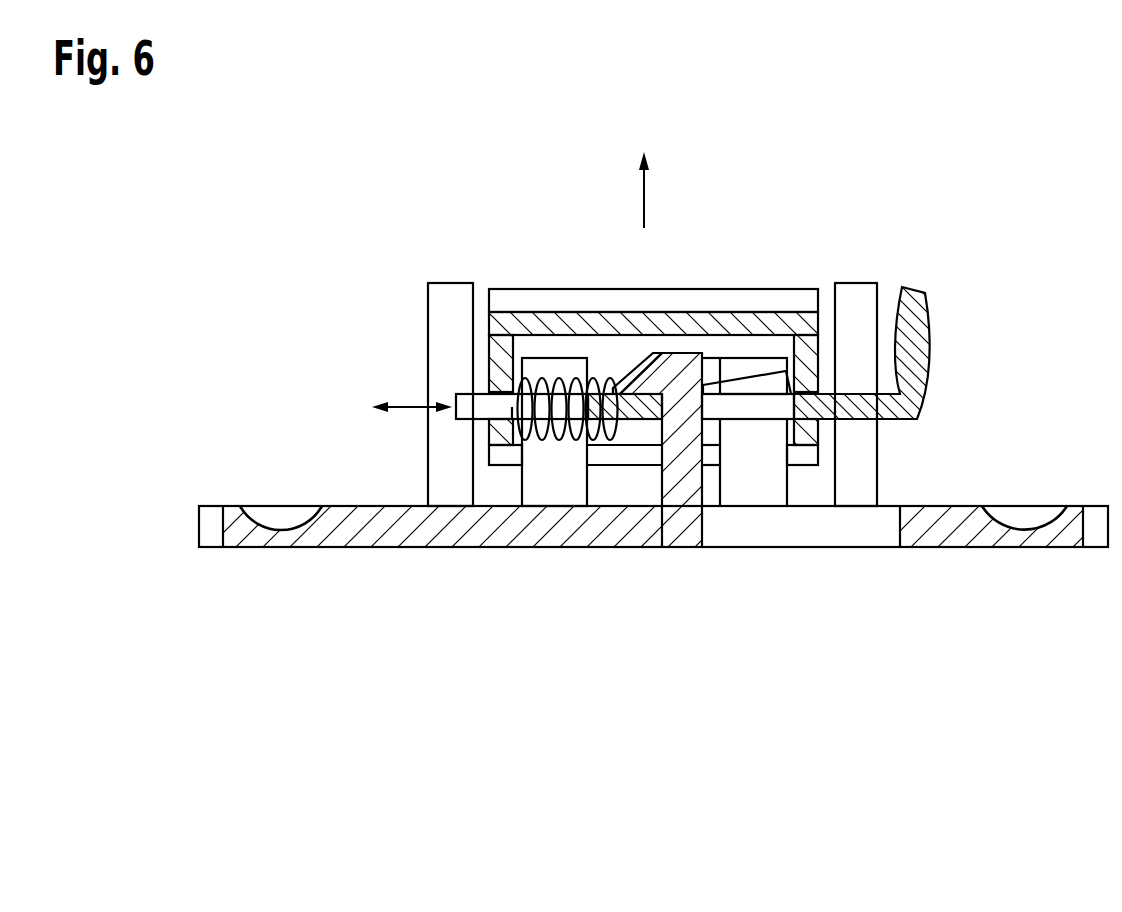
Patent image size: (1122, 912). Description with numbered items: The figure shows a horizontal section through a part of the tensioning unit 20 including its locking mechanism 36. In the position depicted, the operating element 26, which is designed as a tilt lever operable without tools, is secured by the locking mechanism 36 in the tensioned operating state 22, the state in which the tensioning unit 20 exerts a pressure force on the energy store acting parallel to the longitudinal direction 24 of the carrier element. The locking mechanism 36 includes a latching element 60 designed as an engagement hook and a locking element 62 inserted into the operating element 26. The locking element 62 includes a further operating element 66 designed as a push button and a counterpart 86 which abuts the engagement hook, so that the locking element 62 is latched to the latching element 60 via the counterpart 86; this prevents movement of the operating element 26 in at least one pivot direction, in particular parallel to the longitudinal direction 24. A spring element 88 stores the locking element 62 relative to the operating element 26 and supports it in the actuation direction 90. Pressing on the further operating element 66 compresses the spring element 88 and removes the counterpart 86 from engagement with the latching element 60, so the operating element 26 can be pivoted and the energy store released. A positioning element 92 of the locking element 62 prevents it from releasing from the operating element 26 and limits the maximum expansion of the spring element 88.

The tensioning unit 20 is at (1020, 397).
The tensioned operating state 22 is at (983, 262).
The longitudinal direction 24 is at (644, 197).
The operating element 26 is at (550, 320).
The locking mechanism 36 is at (602, 372).
The latching element 60 is at (682, 370).
The locking element 62 is at (463, 413).
The further operating element 66 is at (910, 342).
The counterpart 86 is at (627, 403).
The spring element 88 is at (542, 437).
The actuation direction 90 is at (400, 403).
The positioning element 92 is at (763, 385).